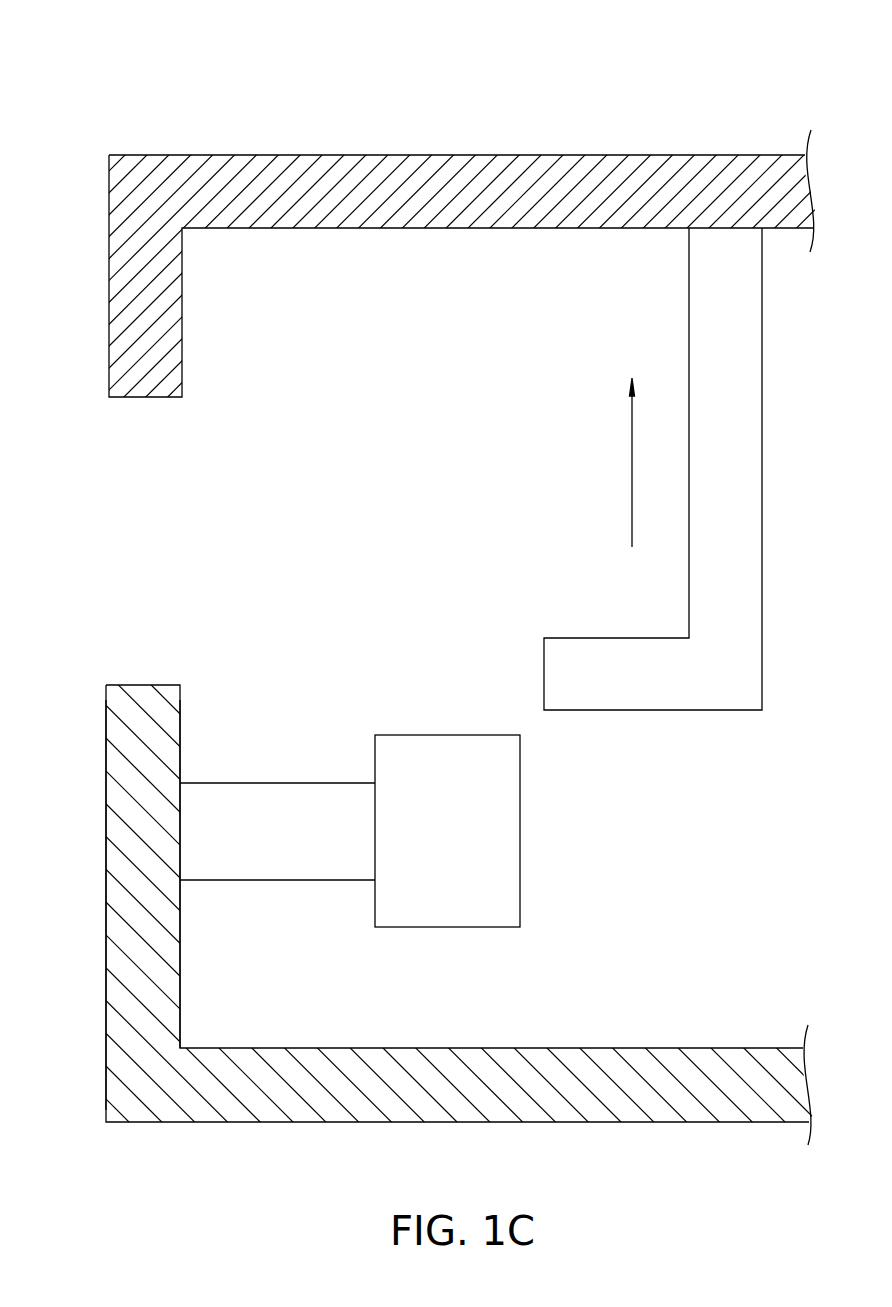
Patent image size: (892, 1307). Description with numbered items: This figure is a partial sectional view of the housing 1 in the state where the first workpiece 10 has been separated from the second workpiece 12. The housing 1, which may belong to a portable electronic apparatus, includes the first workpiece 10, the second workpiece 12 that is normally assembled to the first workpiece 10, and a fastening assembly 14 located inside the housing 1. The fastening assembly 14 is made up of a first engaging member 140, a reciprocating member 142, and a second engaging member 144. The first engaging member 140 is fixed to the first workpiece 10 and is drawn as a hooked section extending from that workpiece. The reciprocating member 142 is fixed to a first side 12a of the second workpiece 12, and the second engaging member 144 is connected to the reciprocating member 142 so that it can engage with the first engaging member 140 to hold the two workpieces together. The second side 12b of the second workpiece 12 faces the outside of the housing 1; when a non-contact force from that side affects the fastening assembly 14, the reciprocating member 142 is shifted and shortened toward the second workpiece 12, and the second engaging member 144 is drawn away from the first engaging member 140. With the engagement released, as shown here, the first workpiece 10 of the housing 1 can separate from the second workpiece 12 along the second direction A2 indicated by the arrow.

The housing 1 is at (116, 131).
The first workpiece 10 is at (447, 188).
The second workpiece 12 is at (695, 1086).
The first side 12a is at (180, 950).
The second side 12b is at (105, 975).
The fastening assembly 14 is at (471, 603).
The first engaging member 140 is at (616, 672).
The reciprocating member 142 is at (306, 853).
The second engaging member 144 is at (452, 833).
The second direction A2 is at (632, 447).